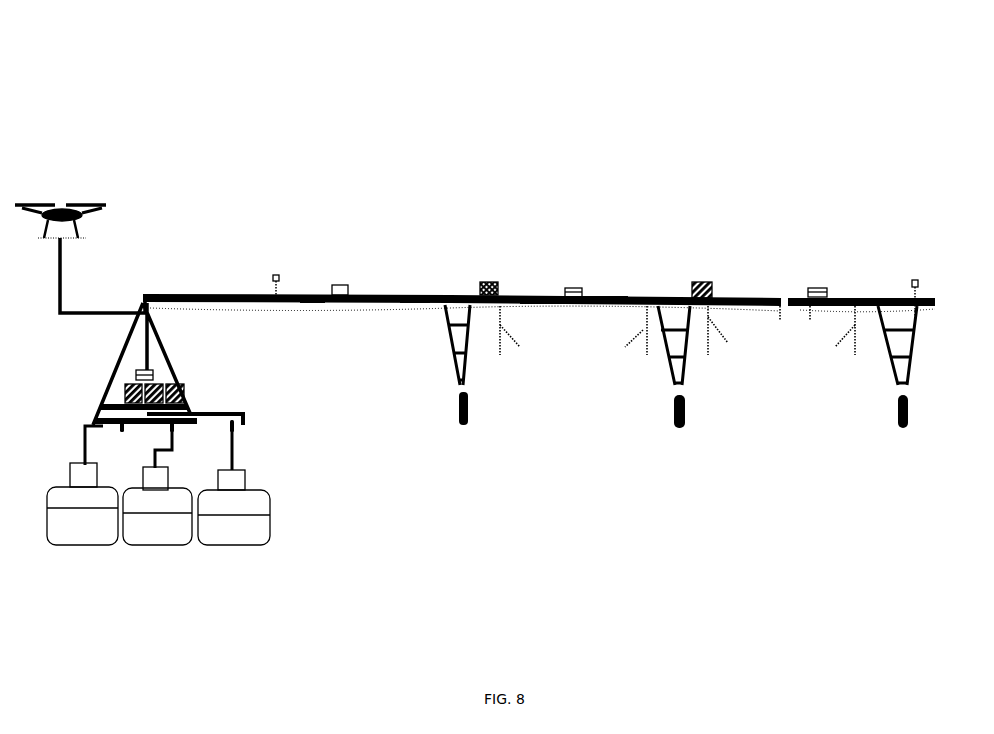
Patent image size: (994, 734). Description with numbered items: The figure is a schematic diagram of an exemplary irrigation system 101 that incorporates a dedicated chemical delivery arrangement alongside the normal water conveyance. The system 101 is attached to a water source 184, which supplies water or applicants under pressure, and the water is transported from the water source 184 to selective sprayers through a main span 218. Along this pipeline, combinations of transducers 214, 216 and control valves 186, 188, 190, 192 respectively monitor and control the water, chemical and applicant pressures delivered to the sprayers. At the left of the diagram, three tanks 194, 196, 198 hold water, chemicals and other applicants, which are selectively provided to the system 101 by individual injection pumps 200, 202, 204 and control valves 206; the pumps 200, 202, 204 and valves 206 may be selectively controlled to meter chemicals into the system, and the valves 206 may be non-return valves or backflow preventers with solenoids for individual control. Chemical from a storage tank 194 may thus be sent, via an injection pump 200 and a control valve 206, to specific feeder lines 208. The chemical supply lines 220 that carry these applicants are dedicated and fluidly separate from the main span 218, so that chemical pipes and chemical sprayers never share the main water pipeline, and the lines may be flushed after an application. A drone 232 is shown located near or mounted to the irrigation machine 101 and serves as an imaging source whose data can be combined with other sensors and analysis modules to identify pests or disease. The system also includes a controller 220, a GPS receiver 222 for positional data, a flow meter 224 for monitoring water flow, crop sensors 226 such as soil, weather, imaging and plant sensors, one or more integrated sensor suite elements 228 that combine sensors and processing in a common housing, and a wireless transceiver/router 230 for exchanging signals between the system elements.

The irrigation system 101 is at (548, 63).
The water source 184 is at (213, 410).
The control valve 186 is at (137, 370).
The control valve 188 is at (348, 285).
The control valve 190 is at (567, 297).
The control valve 192 is at (818, 288).
The tank 194 is at (80, 535).
The tank 196 is at (155, 535).
The tank 198 is at (235, 537).
The injection pump 200 is at (78, 478).
The injection pump 202 is at (160, 468).
The injection pump 204 is at (245, 479).
The control valve 206 is at (236, 429).
The feeder line 208 is at (77, 228).
The transducer 214 is at (495, 282).
The transducer 216 is at (705, 282).
The main span 218 is at (312, 295).
The chemical supply line 220 is at (125, 386).
The GPS receiver 222 is at (914, 280).
The flow meter 224 is at (162, 387).
The crop sensors 226 is at (628, 348).
The integrated sensor suite element 228 is at (275, 275).
The wireless transceiver/router 230 is at (185, 394).
The drone 232 is at (77, 205).